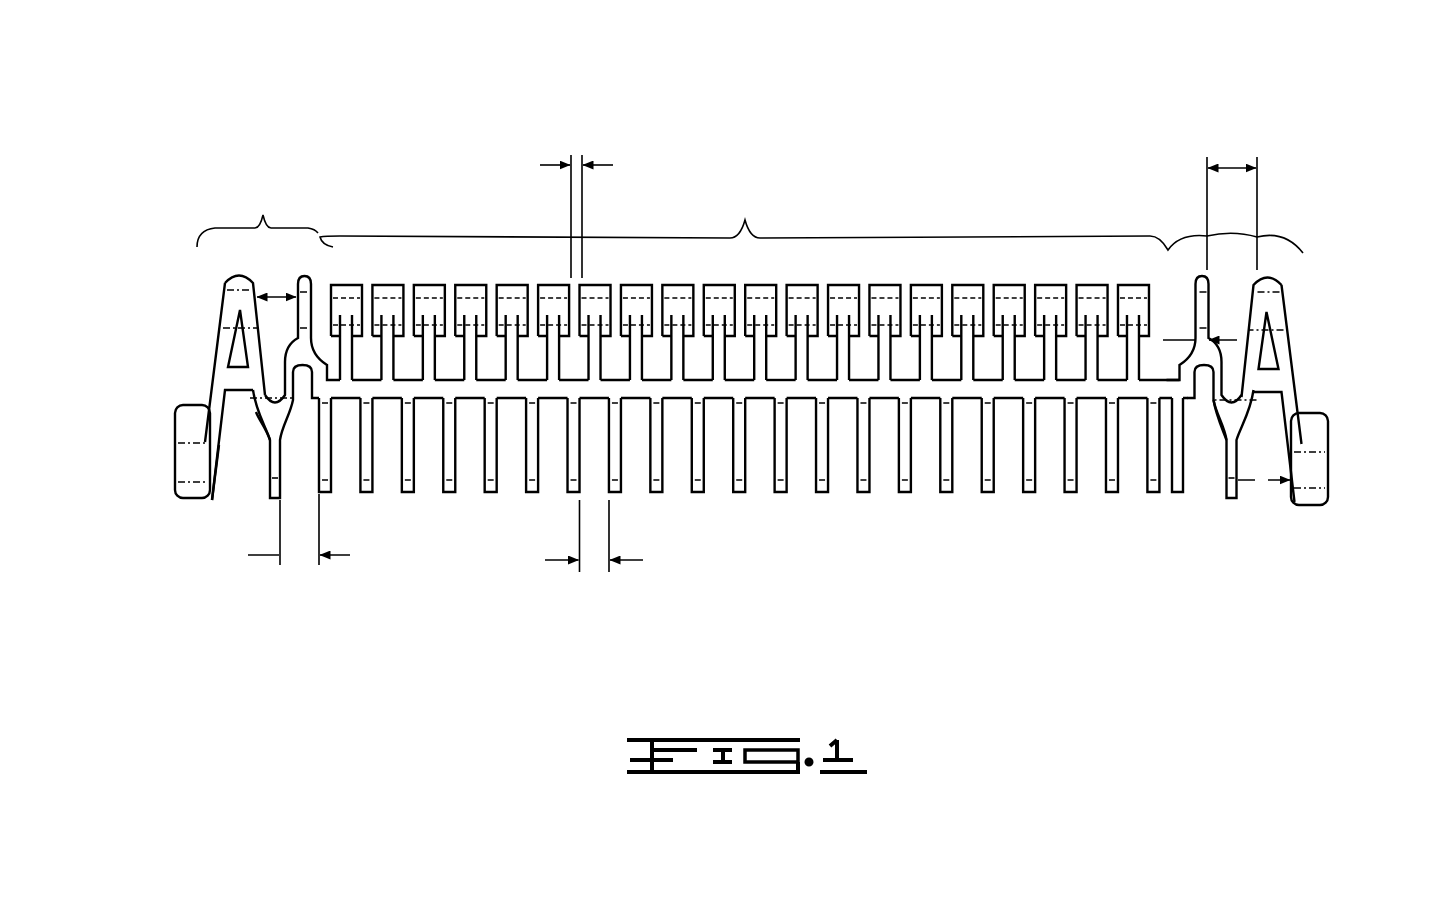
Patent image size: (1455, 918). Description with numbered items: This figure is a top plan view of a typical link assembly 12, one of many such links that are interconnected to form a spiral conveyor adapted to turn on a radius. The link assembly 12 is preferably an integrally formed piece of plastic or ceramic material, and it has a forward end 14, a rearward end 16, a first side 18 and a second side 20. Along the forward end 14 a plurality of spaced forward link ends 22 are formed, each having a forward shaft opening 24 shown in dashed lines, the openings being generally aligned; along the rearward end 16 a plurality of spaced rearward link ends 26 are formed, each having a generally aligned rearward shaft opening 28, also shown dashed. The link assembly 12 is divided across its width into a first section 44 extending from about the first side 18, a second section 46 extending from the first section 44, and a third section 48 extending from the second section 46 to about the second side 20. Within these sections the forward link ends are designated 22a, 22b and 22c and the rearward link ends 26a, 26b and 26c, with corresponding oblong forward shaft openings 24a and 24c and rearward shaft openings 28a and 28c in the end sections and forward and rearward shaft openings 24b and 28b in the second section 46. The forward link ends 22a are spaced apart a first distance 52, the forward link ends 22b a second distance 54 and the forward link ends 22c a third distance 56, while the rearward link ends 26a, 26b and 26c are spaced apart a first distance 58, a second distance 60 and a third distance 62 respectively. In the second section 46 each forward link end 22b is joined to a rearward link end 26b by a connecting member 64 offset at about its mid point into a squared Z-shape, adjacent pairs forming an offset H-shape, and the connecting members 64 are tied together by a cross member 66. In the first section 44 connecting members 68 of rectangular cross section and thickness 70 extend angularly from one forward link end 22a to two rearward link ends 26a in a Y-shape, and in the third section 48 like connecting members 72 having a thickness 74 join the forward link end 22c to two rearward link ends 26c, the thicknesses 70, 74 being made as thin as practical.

The link assembly 12 is at (1314, 304).
The forward end 14 is at (808, 283).
The rearward end 16 is at (741, 499).
The first side 18 is at (194, 345).
The second side 20 is at (1317, 373).
The forward link ends 22 is at (438, 281).
The forward link ends in first section 22a is at (309, 277).
The forward link ends in second section 22b is at (639, 282).
The forward link ends in third section 22c is at (1201, 278).
The forward shaft opening 24 is at (886, 300).
The forward shaft openings in first section 24a is at (238, 296).
The forward shaft openings in second section 24b is at (521, 301).
The forward shaft openings in third section 24c is at (1287, 305).
The rearward link ends 26 is at (451, 500).
The rearward link ends in first section 26a is at (282, 478).
The rearward link ends in second section 26b is at (657, 499).
The rearward link ends in third section 26c is at (1234, 503).
The rearward shaft opening 28 is at (1037, 419).
The rearward shaft openings in first section 28a is at (193, 480).
The rearward shaft openings in second section 28b is at (492, 477).
The rearward shaft openings in third section 28c is at (1322, 476).
The first section 44 is at (263, 216).
The second section 46 is at (746, 221).
The third section 48 is at (1207, 188).
The first distance 52 is at (284, 296).
The second distance 54 is at (610, 166).
The third distance 56 is at (1235, 165).
The first distance 58 is at (350, 557).
The second distance 60 is at (548, 561).
The third distance 62 is at (1262, 482).
The connecting members 64 is at (768, 364).
The cross member 66 is at (450, 388).
The connecting members 68 is at (217, 458).
The thickness 70 is at (262, 416).
The connecting members 72 is at (1217, 422).
The thickness 74 is at (1237, 340).